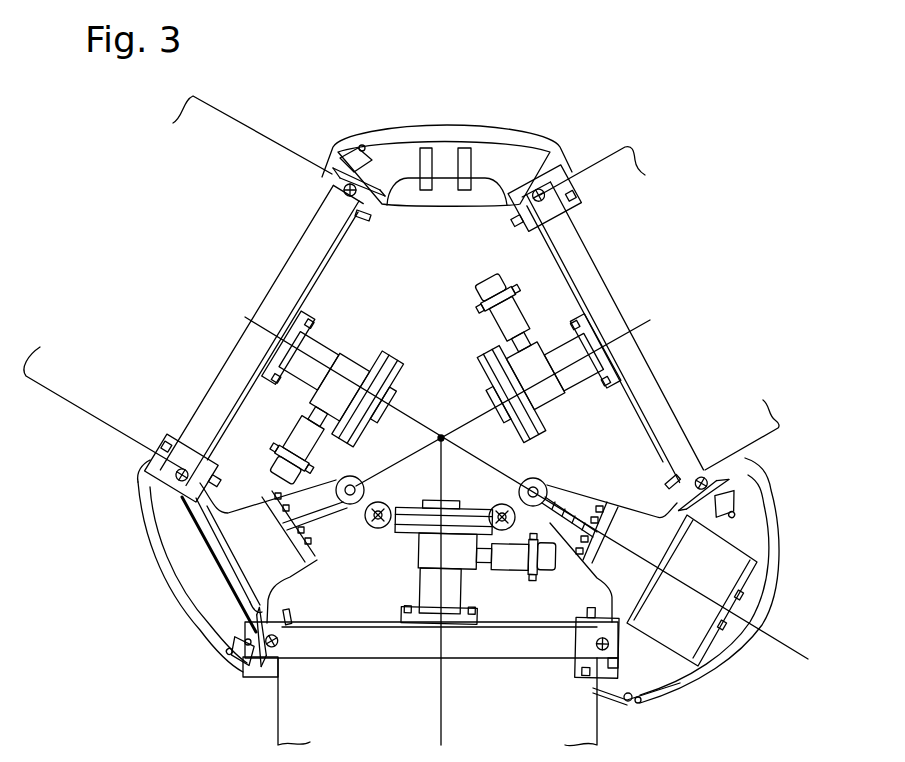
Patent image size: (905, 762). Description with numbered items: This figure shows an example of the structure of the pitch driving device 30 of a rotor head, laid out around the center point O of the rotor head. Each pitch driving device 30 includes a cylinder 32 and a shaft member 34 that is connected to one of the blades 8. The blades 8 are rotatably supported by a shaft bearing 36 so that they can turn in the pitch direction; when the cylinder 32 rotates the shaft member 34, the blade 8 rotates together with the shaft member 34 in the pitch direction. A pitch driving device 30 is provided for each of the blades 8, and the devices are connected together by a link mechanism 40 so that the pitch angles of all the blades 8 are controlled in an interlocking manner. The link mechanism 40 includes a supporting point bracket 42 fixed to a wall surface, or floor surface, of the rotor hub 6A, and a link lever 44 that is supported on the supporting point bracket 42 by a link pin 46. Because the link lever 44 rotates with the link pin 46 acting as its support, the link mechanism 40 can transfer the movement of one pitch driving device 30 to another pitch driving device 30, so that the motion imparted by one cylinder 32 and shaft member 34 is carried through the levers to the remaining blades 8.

The rotor hub 6A is at (509, 196).
The blade 8 is at (93, 410).
The pitch driving device 30 is at (400, 335).
The cylinder 32 is at (486, 300).
The shaft member 34 is at (318, 338).
The shaft bearing 36 is at (342, 170).
The link mechanism 40 is at (590, 455).
The supporting point bracket 42 is at (313, 557).
The link lever 44 is at (372, 505).
The link pin 46 is at (352, 484).
The center point of the rotor head O is at (440, 424).